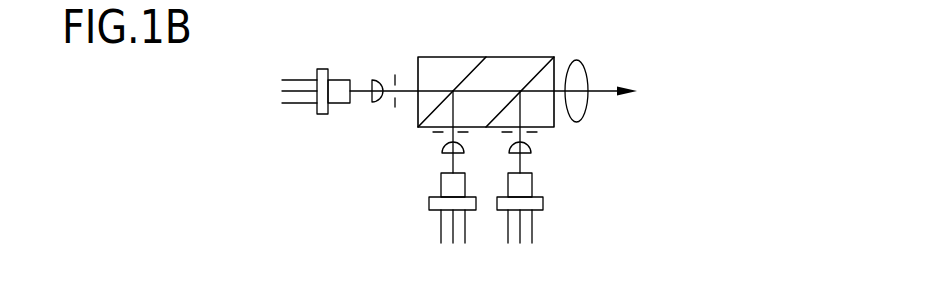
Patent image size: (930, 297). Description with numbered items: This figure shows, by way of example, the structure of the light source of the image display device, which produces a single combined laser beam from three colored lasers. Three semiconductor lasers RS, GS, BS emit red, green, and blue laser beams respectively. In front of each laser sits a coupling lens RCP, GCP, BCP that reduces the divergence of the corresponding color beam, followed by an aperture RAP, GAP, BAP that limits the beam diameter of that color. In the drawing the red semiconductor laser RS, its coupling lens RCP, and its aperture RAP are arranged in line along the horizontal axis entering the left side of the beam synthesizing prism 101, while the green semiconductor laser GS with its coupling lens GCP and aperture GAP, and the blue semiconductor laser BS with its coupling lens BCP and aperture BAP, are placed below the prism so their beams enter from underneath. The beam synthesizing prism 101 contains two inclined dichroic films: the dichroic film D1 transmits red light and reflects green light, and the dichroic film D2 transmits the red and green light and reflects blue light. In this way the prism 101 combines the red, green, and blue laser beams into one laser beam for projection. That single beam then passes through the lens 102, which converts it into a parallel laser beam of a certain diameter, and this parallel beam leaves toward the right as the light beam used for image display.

The semiconductor laser RS is at (317, 62).
The coupling lens RCP is at (380, 73).
The aperture RAP is at (393, 104).
The beam synthesizing prism 101 is at (477, 51).
The dichroic film D1 is at (457, 85).
The dichroic film D2 is at (524, 85).
The lens 102 is at (587, 70).
The aperture GAP is at (438, 136).
The aperture BAP is at (533, 134).
The coupling lens GCP is at (467, 149).
The coupling lens BCP is at (529, 150).
The semiconductor laser GS is at (430, 203).
The semiconductor laser BS is at (543, 203).